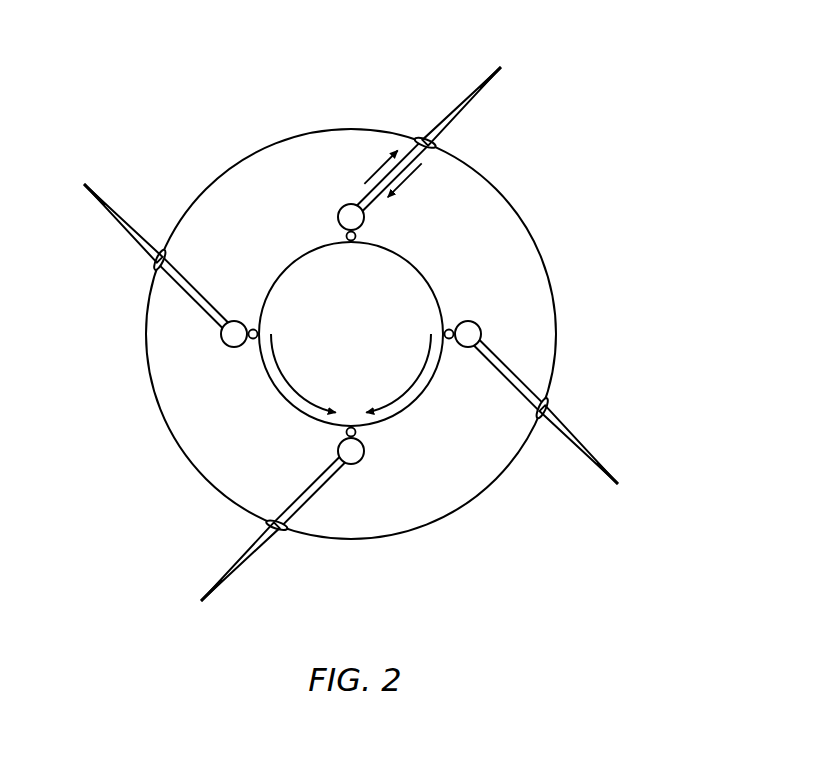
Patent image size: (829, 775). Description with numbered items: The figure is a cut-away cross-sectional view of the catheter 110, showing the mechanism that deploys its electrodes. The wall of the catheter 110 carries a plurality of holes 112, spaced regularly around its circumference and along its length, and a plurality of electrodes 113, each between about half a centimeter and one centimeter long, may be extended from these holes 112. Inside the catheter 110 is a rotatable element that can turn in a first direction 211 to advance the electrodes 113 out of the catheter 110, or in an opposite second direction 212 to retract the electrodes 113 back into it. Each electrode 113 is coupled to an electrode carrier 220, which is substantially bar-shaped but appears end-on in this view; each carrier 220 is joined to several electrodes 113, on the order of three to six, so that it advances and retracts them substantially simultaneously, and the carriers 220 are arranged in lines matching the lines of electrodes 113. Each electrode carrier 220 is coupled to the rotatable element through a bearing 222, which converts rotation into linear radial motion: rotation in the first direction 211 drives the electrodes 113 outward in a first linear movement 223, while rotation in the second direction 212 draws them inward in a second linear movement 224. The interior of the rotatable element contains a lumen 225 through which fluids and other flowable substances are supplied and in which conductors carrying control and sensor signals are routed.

The catheter 110 is at (584, 97).
The holes 112 is at (420, 137).
The electrodes 113 is at (462, 98).
The electrode carrier 220 is at (340, 214).
The bearing 222 is at (358, 236).
The first linear movement 223 is at (372, 181).
The second linear movement 224 is at (408, 177).
The lumen 225 is at (330, 348).
The first direction 211 is at (422, 365).
The second direction 212 is at (280, 365).